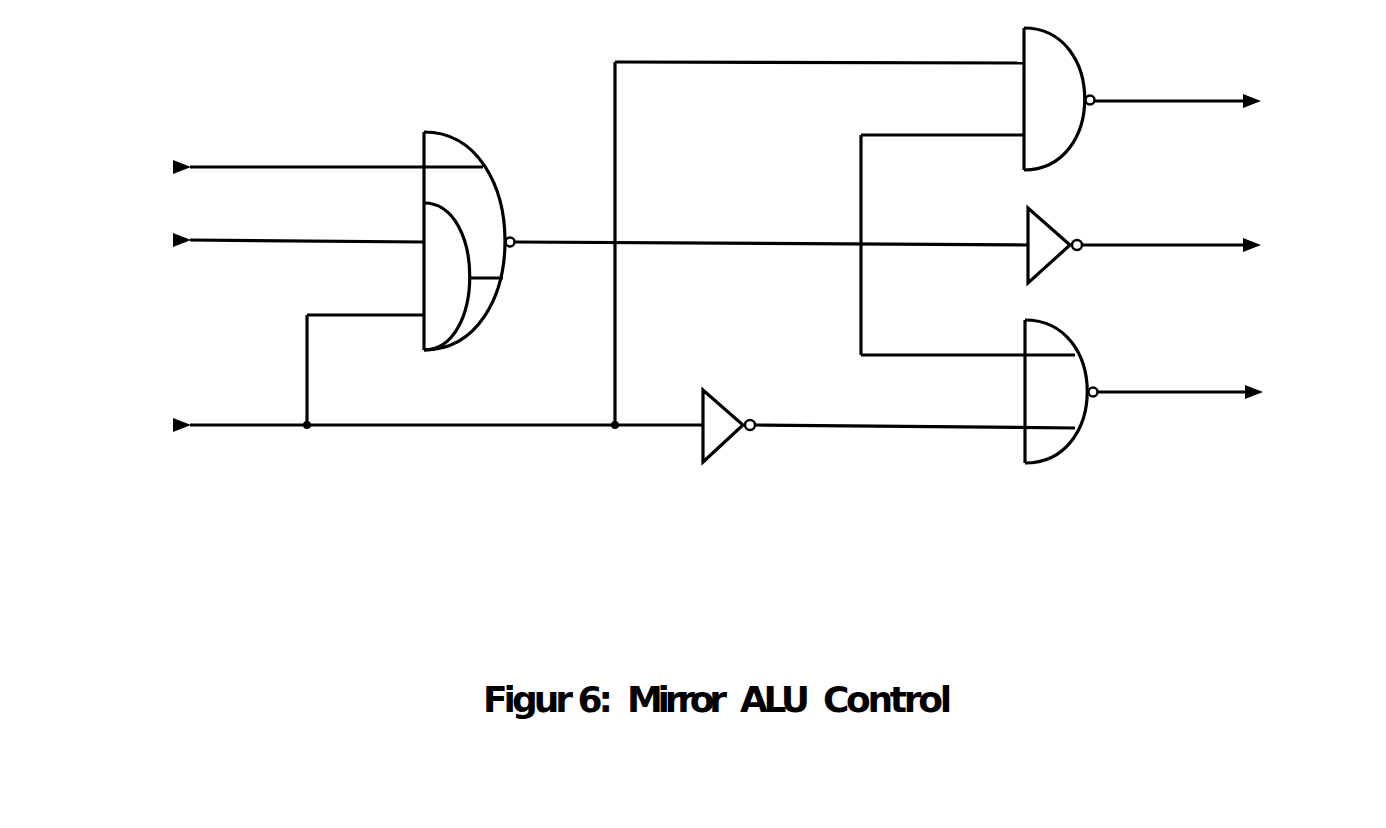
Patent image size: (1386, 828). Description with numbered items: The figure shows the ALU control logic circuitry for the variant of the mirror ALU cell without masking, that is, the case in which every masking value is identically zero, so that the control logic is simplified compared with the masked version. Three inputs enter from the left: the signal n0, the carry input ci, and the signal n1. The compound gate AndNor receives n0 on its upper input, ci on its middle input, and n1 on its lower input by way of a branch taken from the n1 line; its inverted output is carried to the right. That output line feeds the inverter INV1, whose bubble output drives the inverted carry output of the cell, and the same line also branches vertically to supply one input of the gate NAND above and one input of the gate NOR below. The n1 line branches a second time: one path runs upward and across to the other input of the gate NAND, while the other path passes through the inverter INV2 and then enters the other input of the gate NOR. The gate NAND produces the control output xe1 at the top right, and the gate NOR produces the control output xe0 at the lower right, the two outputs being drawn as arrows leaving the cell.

The AND-NOR compound gate AndNor is at (468, 226).
The inverter producing ci* INV1 is at (1066, 251).
The inverter on n1 path INV2 is at (727, 413).
The NAND gate producing xe1 NAND is at (1082, 102).
The NOR gate producing xe0 NOR is at (1075, 394).
The input n0 is at (150, 168).
The carry input ci is at (154, 242).
The input n1 is at (150, 426).
The output xe1 is at (1309, 103).
The output xe0 is at (1310, 394).